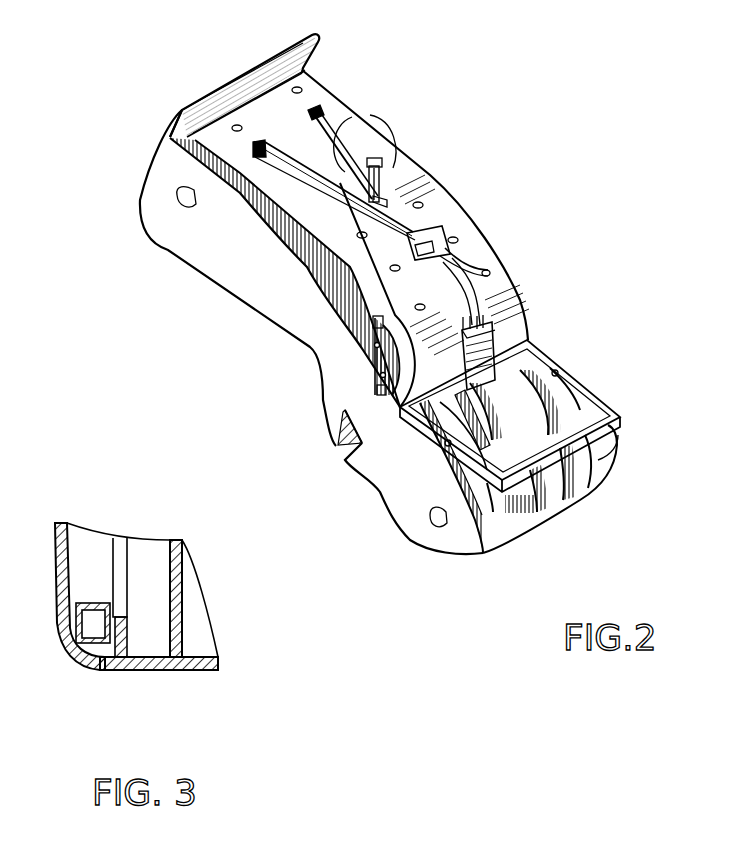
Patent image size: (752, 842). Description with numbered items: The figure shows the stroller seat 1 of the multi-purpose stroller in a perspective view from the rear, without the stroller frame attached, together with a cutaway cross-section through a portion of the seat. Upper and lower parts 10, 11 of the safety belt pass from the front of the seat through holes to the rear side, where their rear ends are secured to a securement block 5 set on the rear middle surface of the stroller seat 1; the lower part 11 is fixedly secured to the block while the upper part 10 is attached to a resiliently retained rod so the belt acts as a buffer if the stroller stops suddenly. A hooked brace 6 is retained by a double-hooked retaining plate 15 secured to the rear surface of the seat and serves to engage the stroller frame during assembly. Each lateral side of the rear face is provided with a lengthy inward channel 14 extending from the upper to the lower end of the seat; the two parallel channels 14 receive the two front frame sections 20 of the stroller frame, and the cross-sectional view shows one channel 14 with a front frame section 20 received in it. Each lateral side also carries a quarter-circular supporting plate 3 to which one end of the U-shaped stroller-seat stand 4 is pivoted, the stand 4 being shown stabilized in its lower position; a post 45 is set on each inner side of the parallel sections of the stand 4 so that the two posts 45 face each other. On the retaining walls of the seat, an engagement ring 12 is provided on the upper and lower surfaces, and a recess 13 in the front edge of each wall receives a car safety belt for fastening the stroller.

In FIG. 2, the stroller seat 1 is at (273, 295).
In FIG. 2, the quarter-circular supporting plate 3 is at (360, 363).
In FIG. 2, the U-shaped stroller-seat stand 4 is at (608, 413).
In FIG. 2, the securement block 5 is at (480, 352).
In FIG. 2, the hooked brace 6 is at (385, 148).
In FIG. 2, the upper part of the safety belt 10 is at (343, 118).
In FIG. 2, the lower part of the safety belt 11 is at (490, 420).
In FIG. 2, the engagement ring 12 is at (173, 210).
In FIG. 2, the recess 13 is at (343, 450).
In FIG. 2, the channel 14 is at (172, 135).
In FIG. 3, the channel 14 is at (57, 537).
In FIG. 2, the double-hooked retaining plate 15 is at (380, 193).
In FIG. 3, the front frame section 20 is at (77, 617).
In FIG. 2, the post 45 is at (448, 440).